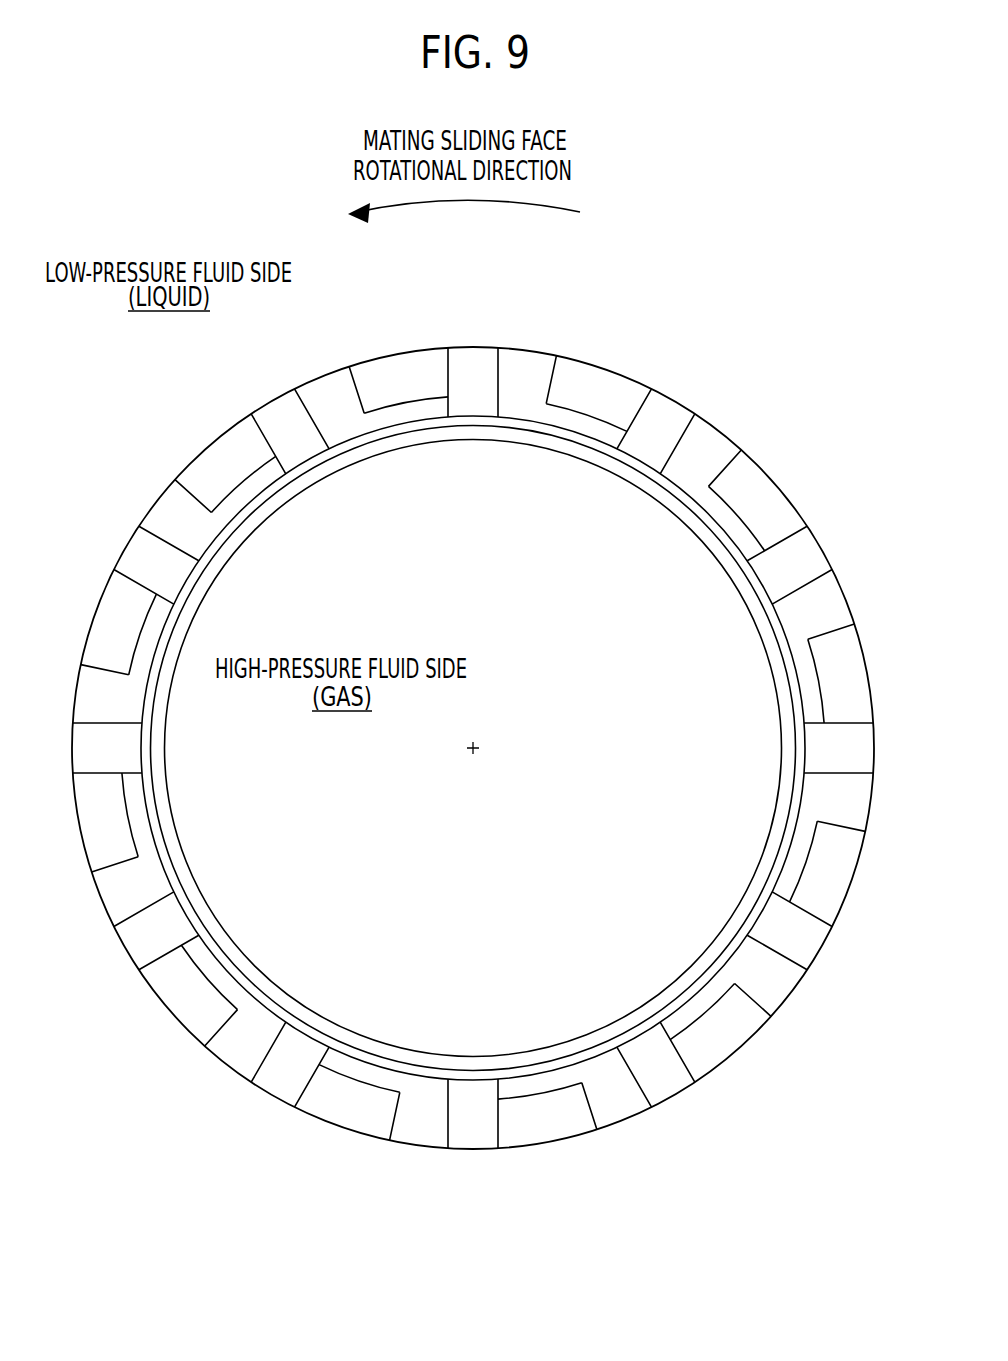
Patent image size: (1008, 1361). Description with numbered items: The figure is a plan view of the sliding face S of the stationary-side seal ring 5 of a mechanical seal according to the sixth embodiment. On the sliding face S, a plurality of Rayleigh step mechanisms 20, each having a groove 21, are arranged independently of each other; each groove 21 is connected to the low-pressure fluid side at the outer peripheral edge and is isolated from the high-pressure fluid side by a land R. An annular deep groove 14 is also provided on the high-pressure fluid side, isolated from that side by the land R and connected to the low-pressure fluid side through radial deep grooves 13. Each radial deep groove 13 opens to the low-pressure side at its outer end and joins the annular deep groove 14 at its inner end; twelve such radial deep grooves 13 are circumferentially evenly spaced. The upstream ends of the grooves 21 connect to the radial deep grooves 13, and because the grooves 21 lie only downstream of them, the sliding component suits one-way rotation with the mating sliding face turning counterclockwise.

The stationary-side seal ring 5 is at (726, 414).
The radial deep groove 13 is at (468, 370).
The annular deep groove 14 is at (520, 428).
The Rayleigh step mechanism 20 is at (398, 341).
The groove 21 is at (385, 383).
The land R is at (327, 402).
The sliding face S is at (533, 377).